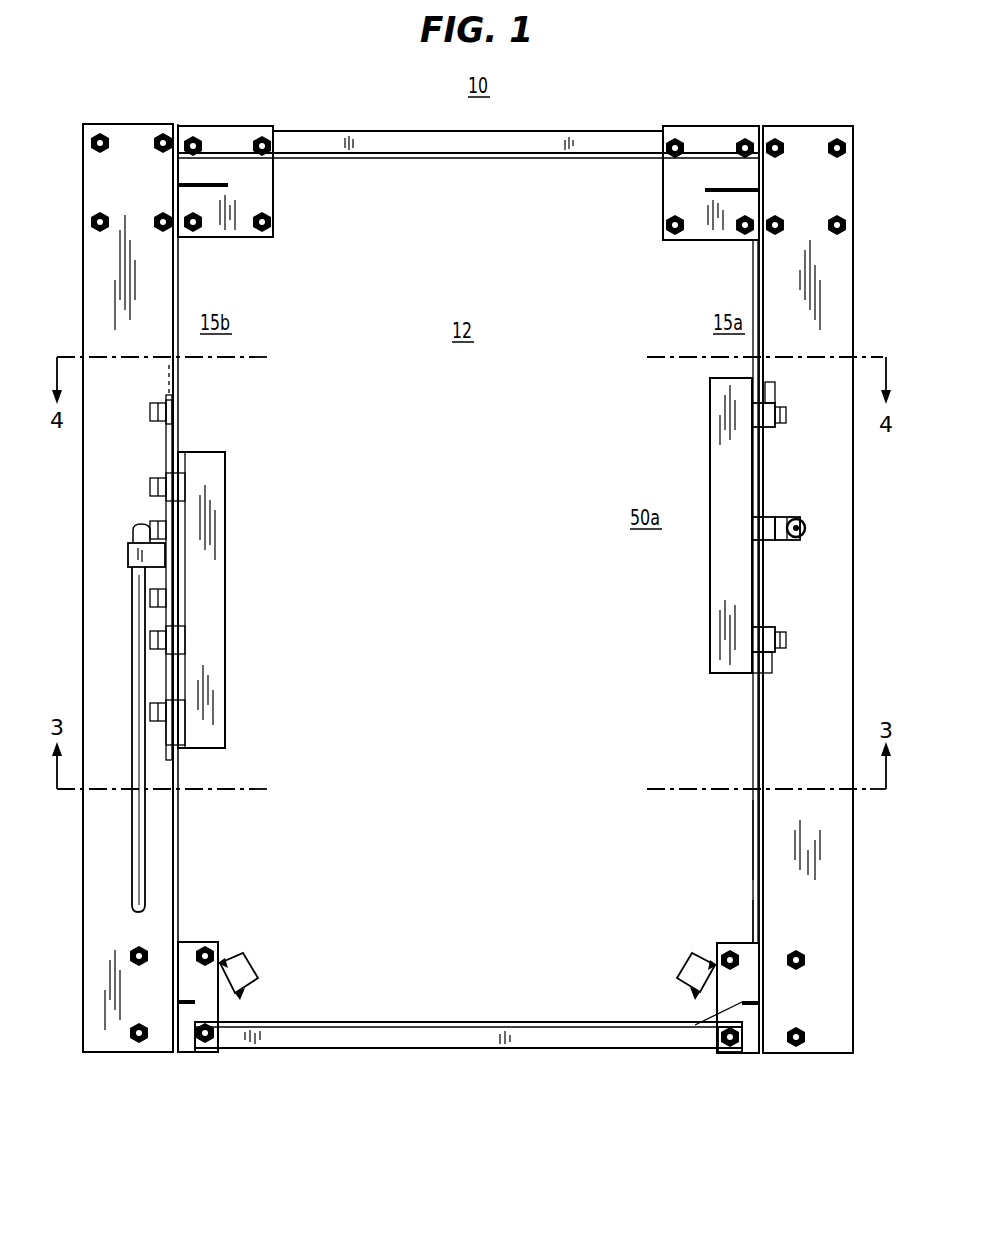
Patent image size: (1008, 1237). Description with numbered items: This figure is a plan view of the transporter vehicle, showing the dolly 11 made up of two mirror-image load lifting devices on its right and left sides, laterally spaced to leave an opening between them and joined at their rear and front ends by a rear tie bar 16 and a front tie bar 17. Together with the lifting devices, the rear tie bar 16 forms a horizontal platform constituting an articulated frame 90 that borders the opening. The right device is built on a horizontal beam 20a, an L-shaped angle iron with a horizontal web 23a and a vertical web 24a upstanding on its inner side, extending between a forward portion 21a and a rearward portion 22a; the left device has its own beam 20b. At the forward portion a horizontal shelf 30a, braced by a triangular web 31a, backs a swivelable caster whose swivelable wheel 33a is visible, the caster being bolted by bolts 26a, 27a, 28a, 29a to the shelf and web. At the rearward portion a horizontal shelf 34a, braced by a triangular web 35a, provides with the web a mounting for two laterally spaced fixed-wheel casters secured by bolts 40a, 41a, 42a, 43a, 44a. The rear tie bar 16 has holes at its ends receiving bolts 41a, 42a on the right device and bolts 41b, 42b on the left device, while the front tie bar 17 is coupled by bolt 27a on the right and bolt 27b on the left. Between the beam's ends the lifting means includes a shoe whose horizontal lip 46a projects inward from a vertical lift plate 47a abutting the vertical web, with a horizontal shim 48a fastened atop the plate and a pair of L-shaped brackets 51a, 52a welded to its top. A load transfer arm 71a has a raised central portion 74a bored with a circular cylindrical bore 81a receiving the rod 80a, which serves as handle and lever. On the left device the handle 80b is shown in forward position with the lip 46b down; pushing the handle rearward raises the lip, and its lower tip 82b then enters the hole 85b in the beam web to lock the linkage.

The dolly 11 is at (175, 130).
The rear tie bar 16 is at (437, 155).
The front tie bar 17 is at (425, 1030).
The horizontal beam 20a is at (775, 738).
The horizontal beam 20b is at (160, 368).
The forward portion of beam 21a is at (778, 918).
The rearward portion of beam 22a is at (810, 145).
The horizontal web 23a is at (830, 1050).
The vertical web 24a is at (757, 840).
The caster bolt 26a is at (725, 958).
The caster bolt 27a is at (730, 1052).
The caster bolt 27b is at (205, 1048).
The caster bolt 28a is at (802, 1033).
The caster bolt 29a is at (802, 955).
The horizontal shelf 30a is at (730, 945).
The triangular web 31a is at (685, 1030).
The swivelable wheel 33a is at (680, 978).
The horizontal shelf 34a is at (685, 240).
The triangular web 35a is at (717, 192).
The caster bolt 40a is at (777, 152).
The caster bolt 41a is at (675, 140).
The caster bolt 41b is at (262, 140).
The caster bolt 42a is at (745, 140).
The caster bolt 42b is at (193, 140).
The caster bolt 43a is at (665, 230).
The caster bolt 44a is at (745, 235).
The horizontal lip 46a is at (728, 595).
The horizontal lip 46b is at (205, 657).
The vertical lift plate 47a is at (740, 462).
The horizontal shim 48a is at (765, 440).
The L-shaped bracket 51a is at (770, 405).
The L-shaped bracket 52a is at (785, 645).
The load transfer arm 71a is at (772, 520).
The raised central portion (sleeve) 74a is at (798, 522).
The rod 80a is at (805, 528).
The handle 80b is at (133, 838).
The circular cylindrical bore 81a is at (805, 542).
The lower tip of handle 82b is at (132, 546).
The hole 85b is at (148, 540).
The articulated frame 90 is at (322, 147).